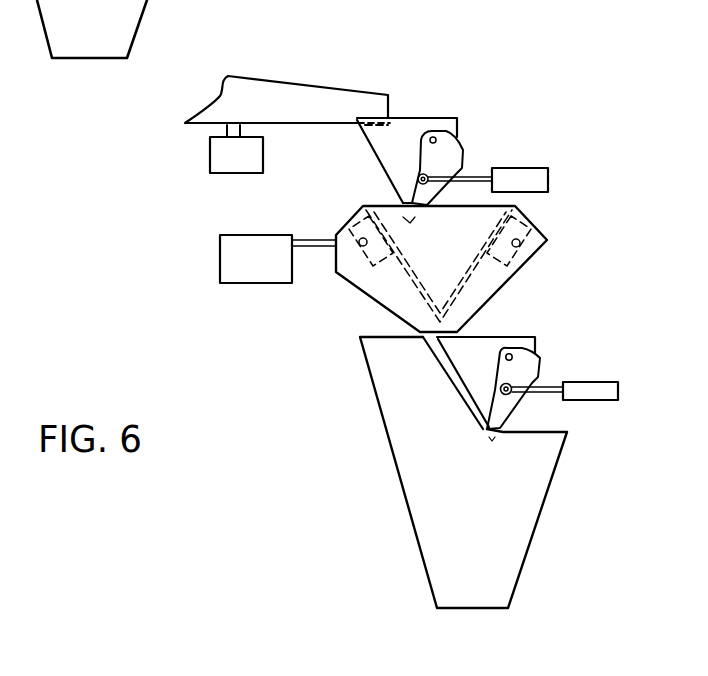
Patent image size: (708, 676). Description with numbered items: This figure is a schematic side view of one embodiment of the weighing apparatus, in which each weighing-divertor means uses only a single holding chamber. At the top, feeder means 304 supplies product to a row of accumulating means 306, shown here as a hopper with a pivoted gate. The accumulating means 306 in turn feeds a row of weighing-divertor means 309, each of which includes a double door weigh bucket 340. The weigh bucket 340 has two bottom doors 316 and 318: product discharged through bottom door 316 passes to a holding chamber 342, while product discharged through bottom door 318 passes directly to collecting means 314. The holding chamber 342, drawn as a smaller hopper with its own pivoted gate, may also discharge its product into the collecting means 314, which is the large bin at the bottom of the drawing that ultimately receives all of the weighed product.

The feeder means 304 is at (280, 75).
The accumulating means 306 is at (473, 118).
The weighing-divertor means 309 is at (425, 257).
The double door weigh bucket 340 is at (536, 226).
The bottom door 316 is at (493, 290).
The bottom door 318 is at (413, 280).
The holding chamber 342 is at (493, 335).
The collecting means 314 is at (407, 462).